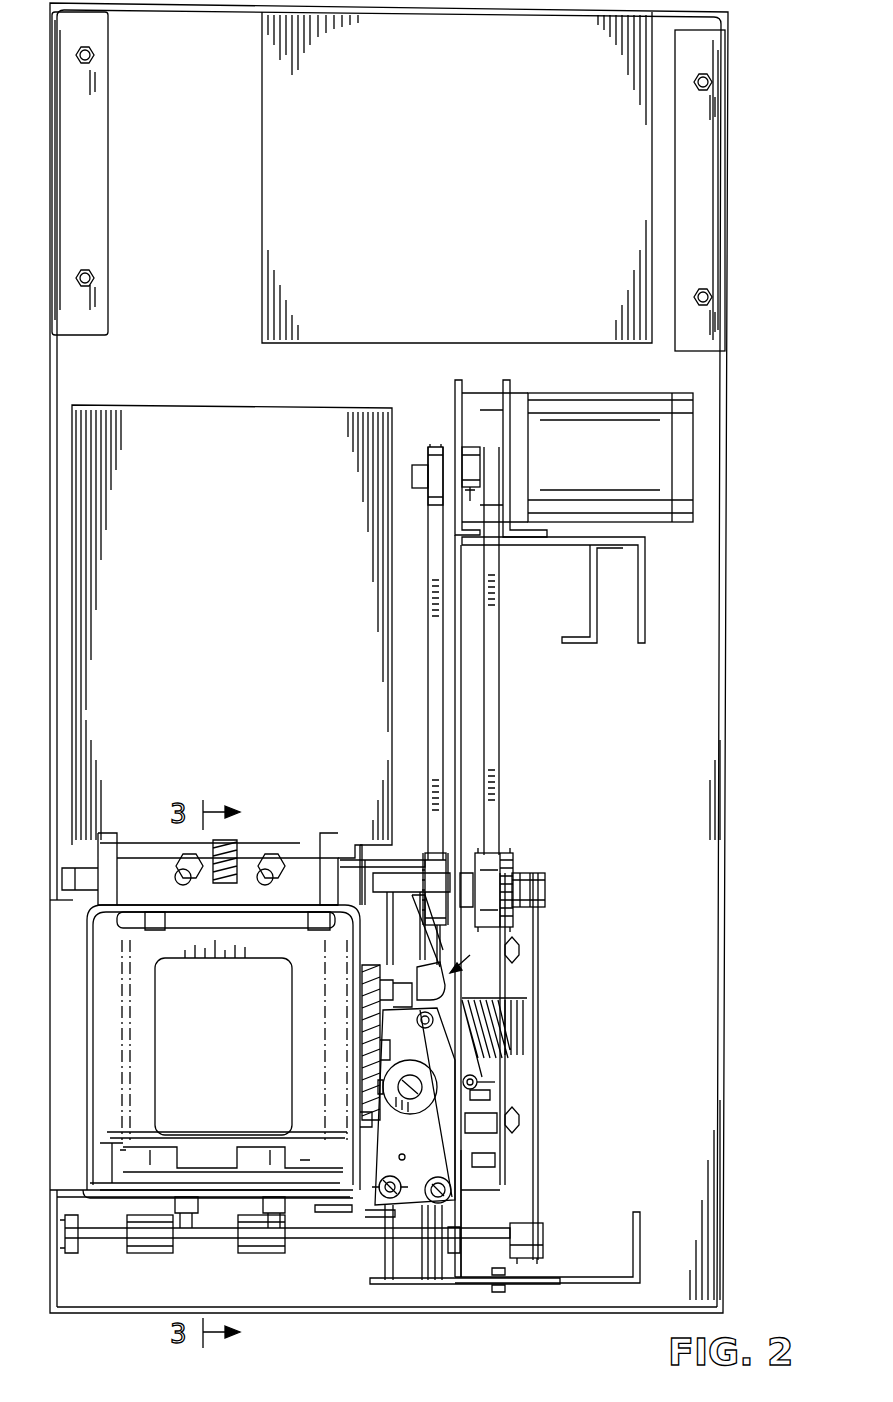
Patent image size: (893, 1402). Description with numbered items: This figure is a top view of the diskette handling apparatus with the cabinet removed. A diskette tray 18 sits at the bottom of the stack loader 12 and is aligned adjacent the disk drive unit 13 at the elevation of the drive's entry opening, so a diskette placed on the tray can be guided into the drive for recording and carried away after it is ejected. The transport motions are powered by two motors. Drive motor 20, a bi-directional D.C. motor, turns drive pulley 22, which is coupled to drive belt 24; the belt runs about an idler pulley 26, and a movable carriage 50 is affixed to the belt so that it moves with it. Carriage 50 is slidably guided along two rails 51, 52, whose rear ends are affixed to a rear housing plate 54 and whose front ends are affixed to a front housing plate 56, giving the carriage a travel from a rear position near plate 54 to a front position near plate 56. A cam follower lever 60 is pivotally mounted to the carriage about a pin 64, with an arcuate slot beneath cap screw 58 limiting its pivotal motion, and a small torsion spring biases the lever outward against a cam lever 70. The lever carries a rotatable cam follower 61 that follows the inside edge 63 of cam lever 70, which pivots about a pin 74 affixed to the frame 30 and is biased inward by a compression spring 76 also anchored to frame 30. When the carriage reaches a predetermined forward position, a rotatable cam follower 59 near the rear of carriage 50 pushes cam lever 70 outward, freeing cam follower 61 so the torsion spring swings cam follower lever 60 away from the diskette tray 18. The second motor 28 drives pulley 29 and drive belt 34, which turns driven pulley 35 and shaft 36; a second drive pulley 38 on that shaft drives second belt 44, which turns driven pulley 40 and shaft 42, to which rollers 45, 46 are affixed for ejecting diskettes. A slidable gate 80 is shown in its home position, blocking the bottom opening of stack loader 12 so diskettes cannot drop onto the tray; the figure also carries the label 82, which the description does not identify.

The stack loader 12 is at (353, 1020).
The disk drive unit 13 is at (248, 649).
The diskette tray 18 is at (148, 1027).
The drive motor 20 is at (488, 392).
The drive pulley 22 is at (422, 465).
The drive belt 24 is at (428, 560).
The idler pulley 26 is at (415, 1262).
The drive motor 28 is at (612, 472).
The drive pulley 29 is at (470, 447).
The frame 30 is at (462, 745).
The drive belt 34 is at (500, 652).
The driven pulley 35 is at (500, 853).
The shaft 36 is at (432, 853).
The second drive pulley 38 is at (540, 873).
The driven pulley 40 is at (540, 1222).
The shaft 42 is at (503, 1222).
The second belt 44 is at (538, 905).
The roller 45 is at (155, 1253).
The roller 46 is at (263, 1257).
The carriage 50 is at (440, 1162).
The rail 51 is at (385, 1257).
The rail 52 is at (430, 1284).
The rear housing plate 54 is at (542, 1288).
The front housing plate 56 is at (418, 860).
The cap screw 58 is at (407, 1071).
The rotatable cam follower 59 is at (448, 1200).
The cam follower lever 60 is at (416, 1150).
The rotatable cam follower 61 is at (462, 968).
The inside edge 63 is at (420, 973).
The pin 64 is at (385, 1195).
The cam lever 70 is at (440, 963).
The pin 74 is at (495, 1083).
The compression spring 76 is at (517, 998).
The slidable gate 80 is at (112, 1143).
The rack 82 is at (365, 990).